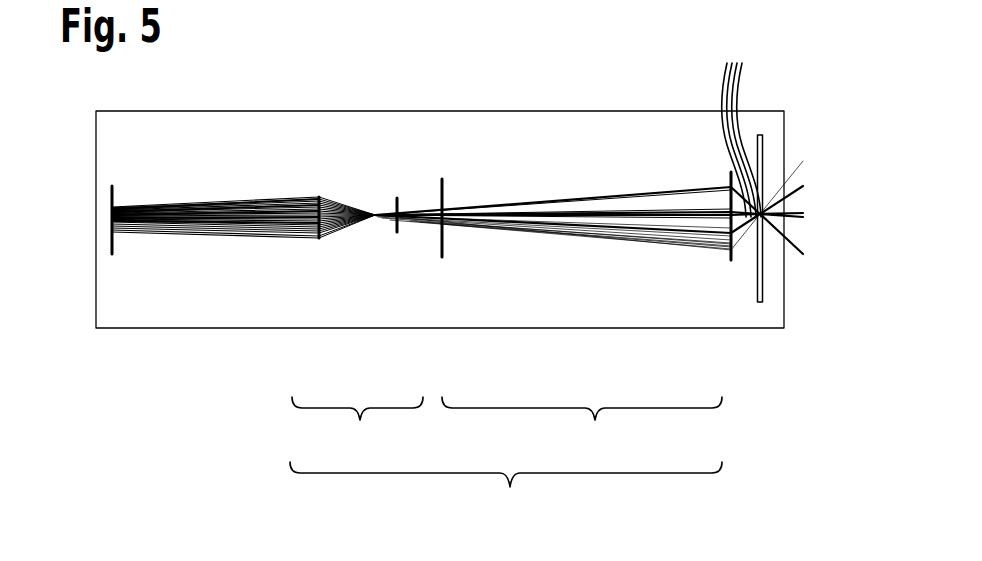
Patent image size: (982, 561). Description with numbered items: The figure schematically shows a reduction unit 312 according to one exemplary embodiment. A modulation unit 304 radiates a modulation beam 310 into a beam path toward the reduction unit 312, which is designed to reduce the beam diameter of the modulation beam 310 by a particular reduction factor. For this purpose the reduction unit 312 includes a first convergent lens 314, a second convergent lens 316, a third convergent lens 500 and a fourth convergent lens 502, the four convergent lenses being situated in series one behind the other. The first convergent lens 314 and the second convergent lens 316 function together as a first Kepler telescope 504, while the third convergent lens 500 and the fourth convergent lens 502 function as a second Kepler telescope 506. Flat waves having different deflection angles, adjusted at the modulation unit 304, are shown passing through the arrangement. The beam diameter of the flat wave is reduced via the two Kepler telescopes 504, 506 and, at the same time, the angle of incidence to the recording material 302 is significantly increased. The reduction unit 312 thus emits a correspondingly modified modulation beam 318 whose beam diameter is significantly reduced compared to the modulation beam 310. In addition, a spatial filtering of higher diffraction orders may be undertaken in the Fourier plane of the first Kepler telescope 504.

The recording material 302 is at (762, 272).
The modulation unit 304 is at (112, 247).
The modulation beam 310 is at (213, 233).
The reduction unit 312 is at (506, 493).
The first convergent lens 314 is at (319, 238).
The second convergent lens 316 is at (397, 232).
The modified modulation beam 318 is at (738, 122).
The third convergent lens 500 is at (442, 250).
The fourth convergent lens 502 is at (731, 258).
The first Kepler telescope 504 is at (357, 428).
The second Kepler telescope 506 is at (582, 428).